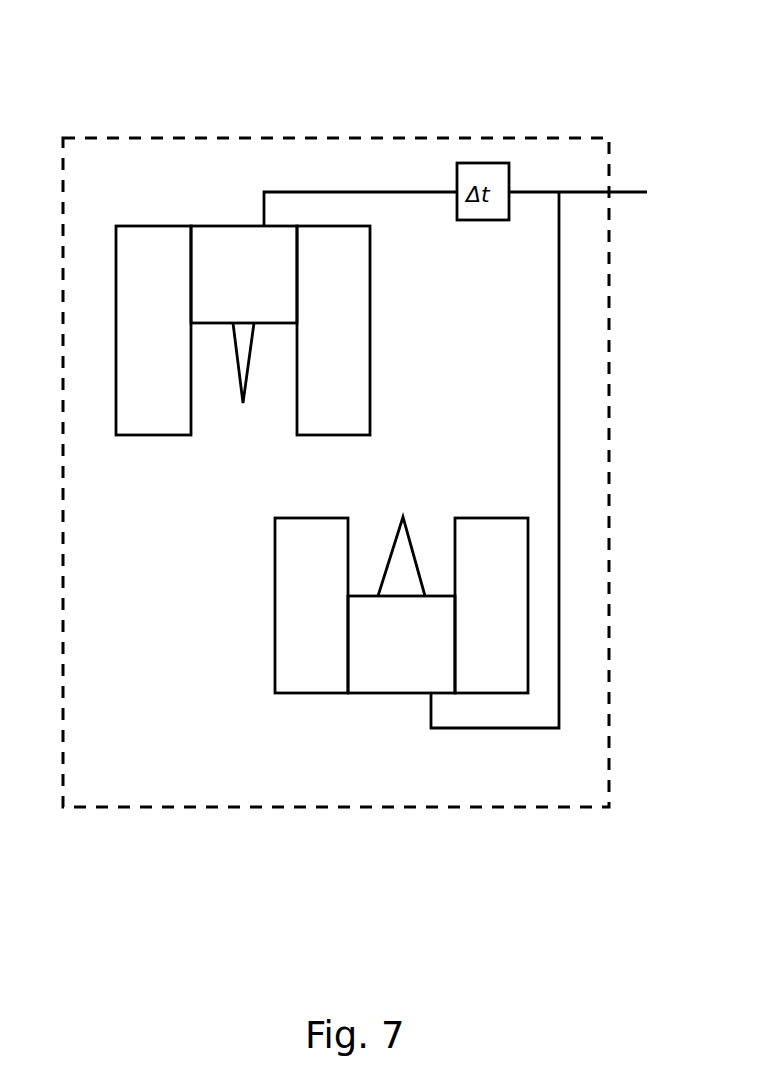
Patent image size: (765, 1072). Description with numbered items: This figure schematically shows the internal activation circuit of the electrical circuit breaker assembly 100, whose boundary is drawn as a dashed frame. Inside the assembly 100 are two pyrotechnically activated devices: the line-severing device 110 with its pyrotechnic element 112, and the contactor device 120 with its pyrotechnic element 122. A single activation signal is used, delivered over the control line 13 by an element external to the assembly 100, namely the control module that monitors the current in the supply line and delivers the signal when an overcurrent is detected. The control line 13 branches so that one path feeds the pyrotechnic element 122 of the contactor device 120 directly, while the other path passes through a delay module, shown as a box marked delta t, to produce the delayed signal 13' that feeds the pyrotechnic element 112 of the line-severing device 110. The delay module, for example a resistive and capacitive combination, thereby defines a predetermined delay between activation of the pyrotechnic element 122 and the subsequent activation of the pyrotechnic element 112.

The electrical circuit breaker assembly 100 is at (258, 136).
The line-severing device 110 is at (243, 307).
The pyrotechnic element 112 is at (228, 236).
The contactor device 120 is at (401, 624).
The pyrotechnic element 122 is at (392, 676).
The control line 13 is at (558, 464).
The delayed activation signal 13' is at (360, 222).